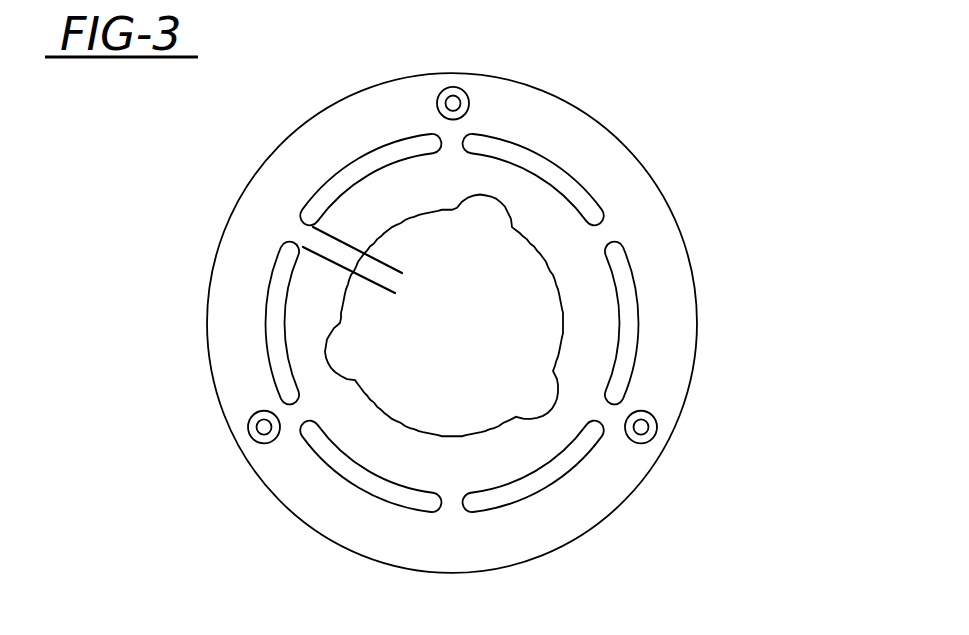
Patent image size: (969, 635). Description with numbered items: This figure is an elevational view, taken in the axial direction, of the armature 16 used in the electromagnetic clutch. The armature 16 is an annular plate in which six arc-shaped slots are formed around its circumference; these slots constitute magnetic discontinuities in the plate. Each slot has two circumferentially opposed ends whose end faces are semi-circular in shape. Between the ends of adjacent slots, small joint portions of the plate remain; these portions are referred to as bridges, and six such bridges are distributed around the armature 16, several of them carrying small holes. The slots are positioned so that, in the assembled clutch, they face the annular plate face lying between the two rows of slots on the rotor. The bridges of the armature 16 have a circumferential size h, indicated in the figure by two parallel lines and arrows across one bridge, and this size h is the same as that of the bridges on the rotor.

The armature 16 is at (582, 128).
The circumferential size h is at (410, 232).